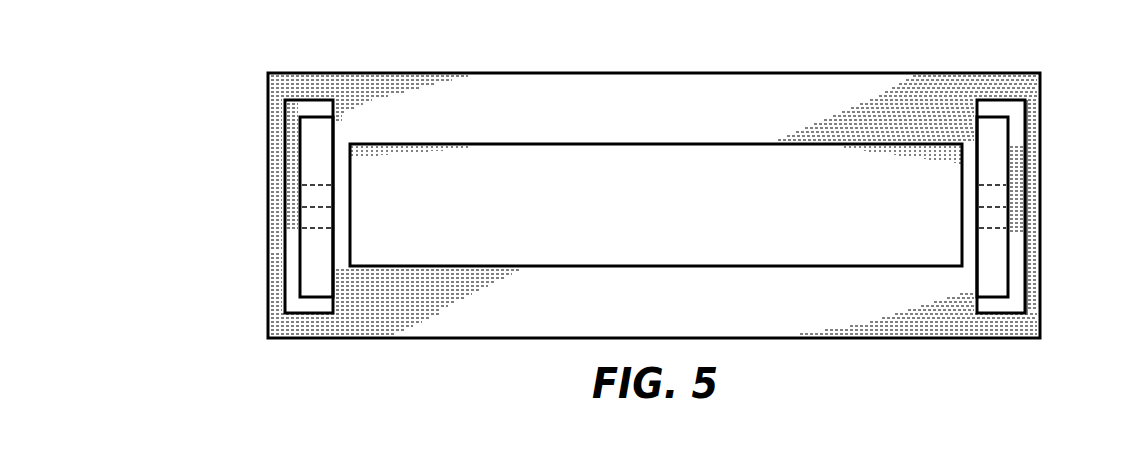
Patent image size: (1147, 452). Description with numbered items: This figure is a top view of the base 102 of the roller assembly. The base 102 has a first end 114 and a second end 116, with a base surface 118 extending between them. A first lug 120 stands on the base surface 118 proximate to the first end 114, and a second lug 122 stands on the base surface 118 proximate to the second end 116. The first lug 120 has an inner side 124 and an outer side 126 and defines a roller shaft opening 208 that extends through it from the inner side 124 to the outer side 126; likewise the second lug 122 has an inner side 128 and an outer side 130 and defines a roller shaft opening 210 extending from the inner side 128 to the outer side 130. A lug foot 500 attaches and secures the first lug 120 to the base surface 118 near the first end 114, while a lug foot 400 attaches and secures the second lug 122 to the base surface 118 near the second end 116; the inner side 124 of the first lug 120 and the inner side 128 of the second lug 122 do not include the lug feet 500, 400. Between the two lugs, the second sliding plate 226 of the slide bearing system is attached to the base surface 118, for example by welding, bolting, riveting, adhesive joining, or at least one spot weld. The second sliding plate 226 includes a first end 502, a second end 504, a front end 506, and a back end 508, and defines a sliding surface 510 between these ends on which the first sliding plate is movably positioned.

The base 102 is at (698, 73).
The first end 114 is at (268, 305).
The second end 116 is at (1040, 305).
The base surface 118 is at (568, 98).
The first lug 120 is at (312, 127).
The second lug 122 is at (995, 177).
The inner side 124 is at (333, 128).
The outer side 126 is at (300, 243).
The inner side 128 is at (977, 128).
The outer side 130 is at (1027, 130).
The roller shaft opening 208 is at (300, 186).
The roller shaft opening 210 is at (1042, 188).
The second sliding plate 226 is at (813, 163).
The lug foot 400 is at (1013, 233).
The lug foot 500 is at (267, 145).
The first end 502 is at (350, 205).
The second end 504 is at (963, 242).
The front end 506 is at (518, 267).
The back end 508 is at (512, 142).
The sliding surface 510 is at (613, 173).